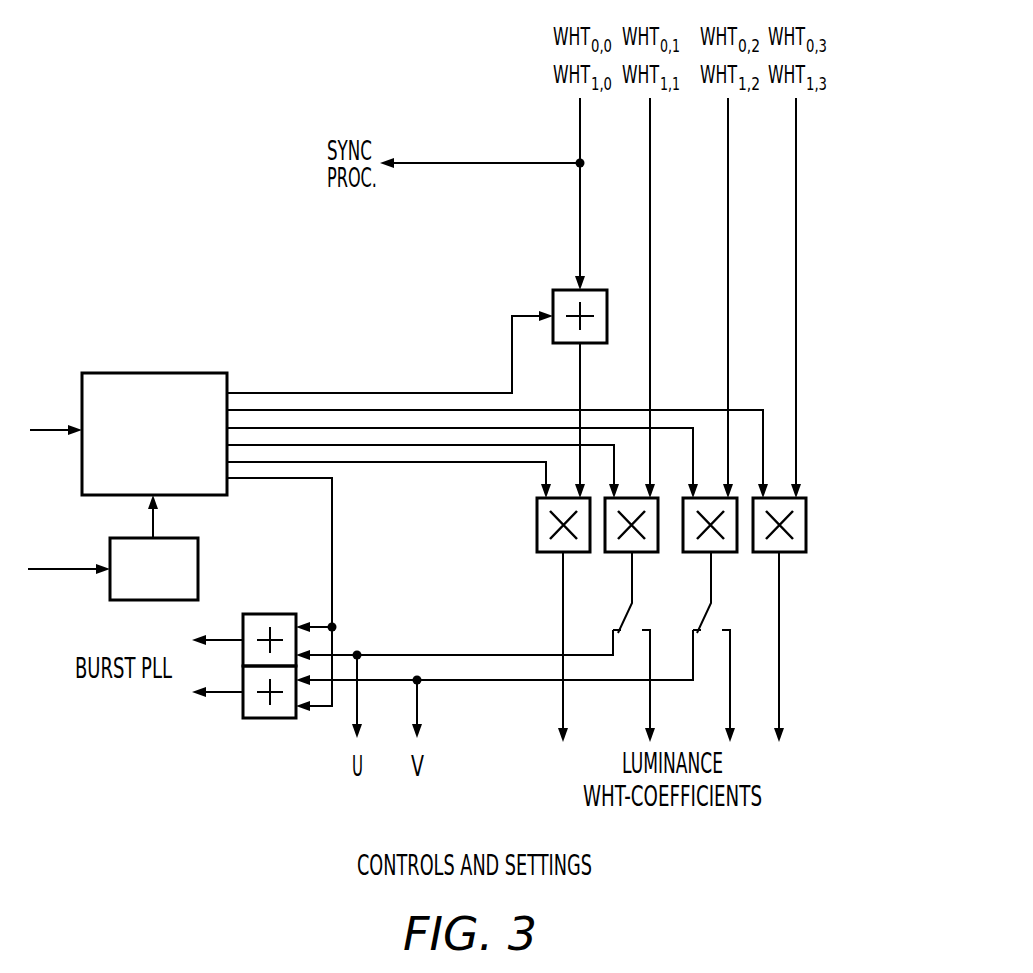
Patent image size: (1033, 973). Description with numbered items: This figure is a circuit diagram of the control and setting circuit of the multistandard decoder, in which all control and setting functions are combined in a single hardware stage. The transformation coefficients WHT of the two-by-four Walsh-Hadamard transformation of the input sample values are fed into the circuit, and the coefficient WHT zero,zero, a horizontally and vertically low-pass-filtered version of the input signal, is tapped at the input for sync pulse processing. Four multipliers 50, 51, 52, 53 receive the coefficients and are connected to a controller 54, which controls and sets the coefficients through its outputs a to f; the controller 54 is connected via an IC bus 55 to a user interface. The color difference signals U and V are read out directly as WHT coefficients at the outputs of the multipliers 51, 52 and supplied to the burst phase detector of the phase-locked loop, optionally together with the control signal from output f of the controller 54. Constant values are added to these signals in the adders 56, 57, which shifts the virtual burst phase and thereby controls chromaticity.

The multiplier 50 is at (537, 513).
The multiplier 51 is at (612, 555).
The multiplier 52 is at (722, 555).
The multiplier 53 is at (806, 513).
The controller 54 is at (150, 371).
The IC bus 55 is at (198, 558).
The adder 56 is at (268, 610).
The adder 57 is at (262, 718).